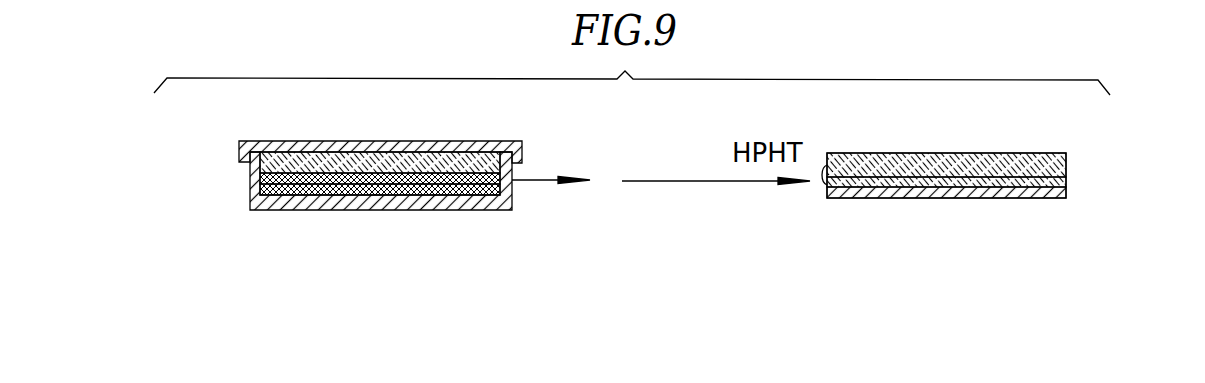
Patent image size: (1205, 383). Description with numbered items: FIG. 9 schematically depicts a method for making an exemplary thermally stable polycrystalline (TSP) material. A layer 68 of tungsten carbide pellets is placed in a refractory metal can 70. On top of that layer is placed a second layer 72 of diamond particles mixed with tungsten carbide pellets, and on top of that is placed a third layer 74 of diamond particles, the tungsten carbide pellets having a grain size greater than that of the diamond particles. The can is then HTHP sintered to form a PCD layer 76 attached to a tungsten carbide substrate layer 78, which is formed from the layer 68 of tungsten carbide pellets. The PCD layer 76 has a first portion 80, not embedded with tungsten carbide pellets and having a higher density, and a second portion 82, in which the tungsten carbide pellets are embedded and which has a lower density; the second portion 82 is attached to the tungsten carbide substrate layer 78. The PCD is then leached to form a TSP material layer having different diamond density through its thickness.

The layer of tungsten carbide pellets 68 is at (262, 189).
The refractory metal can 70 is at (262, 179).
The second layer 72 is at (512, 197).
The third layer 74 is at (262, 167).
The PCD layer 76 is at (824, 169).
The tungsten carbide substrate layer 78 is at (827, 190).
The first portion 80 is at (1010, 165).
The second portion 82 is at (1066, 194).